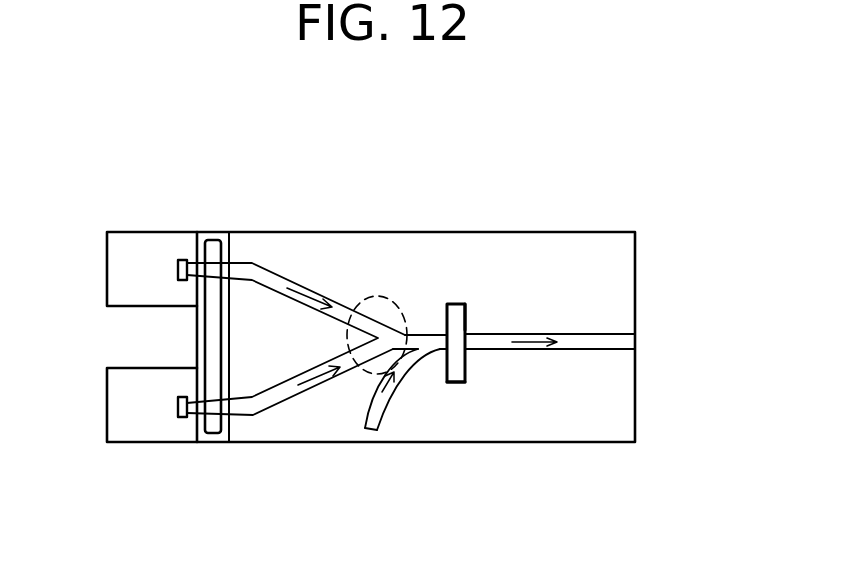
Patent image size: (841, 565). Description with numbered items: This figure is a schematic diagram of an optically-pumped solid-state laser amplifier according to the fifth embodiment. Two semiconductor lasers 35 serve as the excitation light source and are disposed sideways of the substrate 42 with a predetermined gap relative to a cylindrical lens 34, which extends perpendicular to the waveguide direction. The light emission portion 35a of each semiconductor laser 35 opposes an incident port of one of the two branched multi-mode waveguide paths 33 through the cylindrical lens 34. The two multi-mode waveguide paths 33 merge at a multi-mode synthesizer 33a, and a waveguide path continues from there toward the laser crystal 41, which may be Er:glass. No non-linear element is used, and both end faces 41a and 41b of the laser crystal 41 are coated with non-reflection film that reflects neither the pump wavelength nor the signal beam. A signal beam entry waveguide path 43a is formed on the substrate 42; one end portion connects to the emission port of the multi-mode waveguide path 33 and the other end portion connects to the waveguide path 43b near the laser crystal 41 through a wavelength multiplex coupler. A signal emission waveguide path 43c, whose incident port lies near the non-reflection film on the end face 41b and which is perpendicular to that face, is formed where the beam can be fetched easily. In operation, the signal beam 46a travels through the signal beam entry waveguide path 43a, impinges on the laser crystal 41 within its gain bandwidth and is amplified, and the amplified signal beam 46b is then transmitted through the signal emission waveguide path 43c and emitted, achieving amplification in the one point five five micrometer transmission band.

The multi-mode waveguide path 33 is at (273, 275).
The multi-mode synthesizer 33a is at (362, 297).
The cylindrical lens 34 is at (215, 433).
The semiconductor laser 35 is at (118, 413).
The light emission portion 35a is at (183, 420).
The laser crystal 41 is at (456, 304).
The end face of laser crystal 41a is at (438, 372).
The end face of laser crystal 41b is at (468, 317).
The substrate 42 is at (288, 420).
The signal beam entry waveguide path 43a is at (373, 432).
The waveguide path 43b is at (432, 335).
The signal emission waveguide path 43c is at (627, 342).
The signal beam 46a is at (390, 397).
The amplified signal beam 46b is at (527, 337).